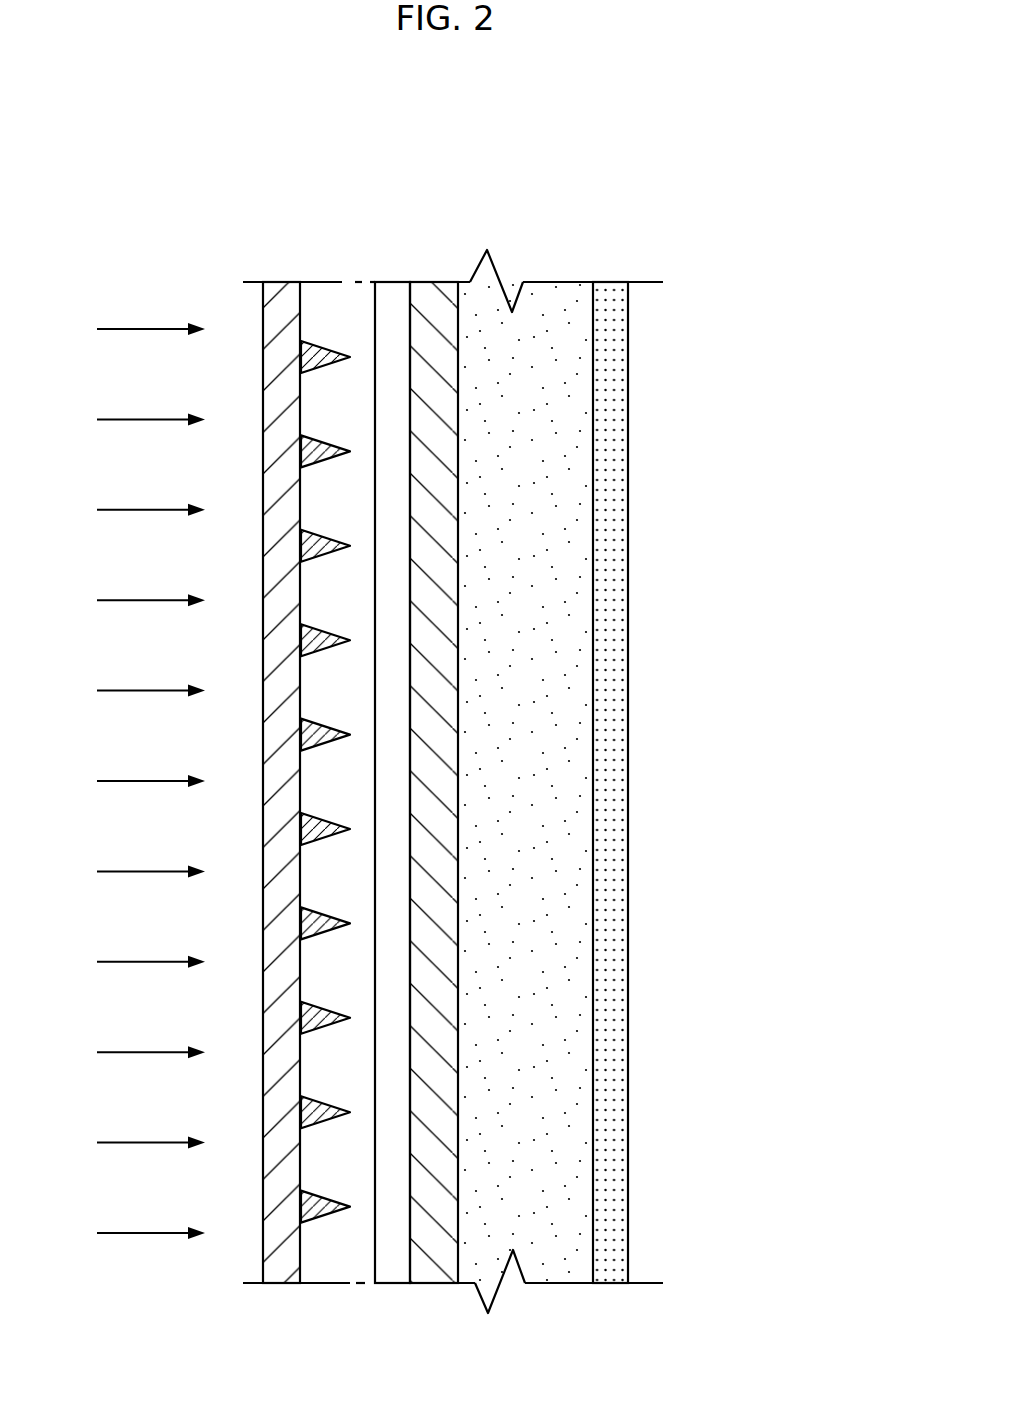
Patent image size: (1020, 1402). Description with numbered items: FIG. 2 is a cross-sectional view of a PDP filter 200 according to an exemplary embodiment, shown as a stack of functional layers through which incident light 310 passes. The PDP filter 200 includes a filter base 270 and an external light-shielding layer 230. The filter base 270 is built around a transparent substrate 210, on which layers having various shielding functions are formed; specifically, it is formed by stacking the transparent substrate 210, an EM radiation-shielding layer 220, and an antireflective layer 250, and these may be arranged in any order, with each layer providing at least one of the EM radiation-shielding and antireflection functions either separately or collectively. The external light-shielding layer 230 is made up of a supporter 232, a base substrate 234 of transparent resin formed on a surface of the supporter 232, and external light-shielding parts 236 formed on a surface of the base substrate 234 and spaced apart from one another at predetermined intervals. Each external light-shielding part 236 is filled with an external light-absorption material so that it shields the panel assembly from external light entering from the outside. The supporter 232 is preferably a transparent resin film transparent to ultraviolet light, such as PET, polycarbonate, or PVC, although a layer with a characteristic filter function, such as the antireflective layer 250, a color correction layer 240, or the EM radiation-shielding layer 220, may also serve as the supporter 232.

The PDP filter 200 is at (681, 246).
The transparent substrate 210 is at (548, 313).
The EM radiation-shielding layer 220 is at (433, 310).
The external light-shielding layer 230 is at (430, 184).
The supporter 232 is at (397, 303).
The base substrate 234 is at (342, 303).
The external light-shielding part 236 is at (322, 343).
The color correction layer 240 is at (285, 308).
The antireflective layer 250 is at (615, 307).
The filter base 270 is at (630, 184).
The incident light 310 is at (150, 329).